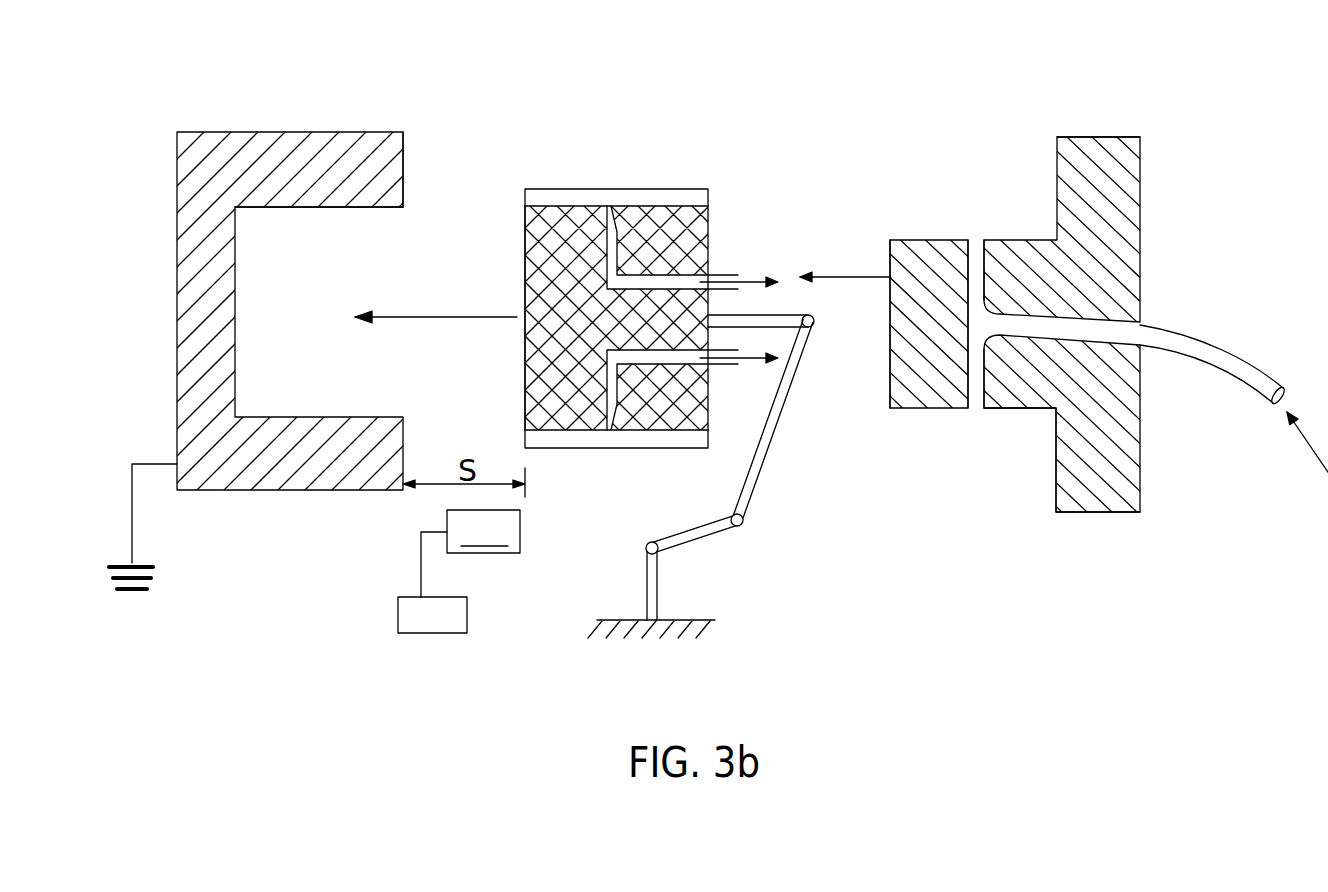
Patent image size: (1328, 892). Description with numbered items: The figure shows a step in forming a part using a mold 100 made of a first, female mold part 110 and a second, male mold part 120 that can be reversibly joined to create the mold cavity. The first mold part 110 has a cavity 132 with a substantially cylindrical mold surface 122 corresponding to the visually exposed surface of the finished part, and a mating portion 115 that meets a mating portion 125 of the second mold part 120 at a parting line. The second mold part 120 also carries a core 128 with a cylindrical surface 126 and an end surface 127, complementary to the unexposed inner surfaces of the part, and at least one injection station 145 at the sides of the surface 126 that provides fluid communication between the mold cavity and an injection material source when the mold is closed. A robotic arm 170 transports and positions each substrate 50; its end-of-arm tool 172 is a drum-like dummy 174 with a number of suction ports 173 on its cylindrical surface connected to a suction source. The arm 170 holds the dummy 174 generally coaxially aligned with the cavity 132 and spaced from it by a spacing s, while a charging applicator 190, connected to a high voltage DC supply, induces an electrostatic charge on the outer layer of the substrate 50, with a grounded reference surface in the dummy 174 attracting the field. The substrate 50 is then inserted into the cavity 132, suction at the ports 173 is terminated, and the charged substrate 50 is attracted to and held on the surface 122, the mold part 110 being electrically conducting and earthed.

The mold 100 is at (775, 62).
The first, female mold part 110 is at (275, 133).
The mating portion 115 is at (405, 168).
The second, male mold part 120 is at (1087, 137).
The mold surface 122 is at (352, 208).
The mating portion 125 is at (1057, 142).
The cylindrical surface 126 is at (1032, 238).
The end surface 127 is at (888, 367).
The core 128 is at (1050, 385).
The cavity 132 is at (267, 300).
The injection station 145 is at (975, 257).
The substrate 50 is at (662, 201).
The robotic arm 170 is at (765, 547).
The end-of-arm tool 172 is at (715, 238).
The suction ports 173 is at (612, 228).
The dummy 174 is at (527, 372).
The charging applicator 190 is at (459, 572).